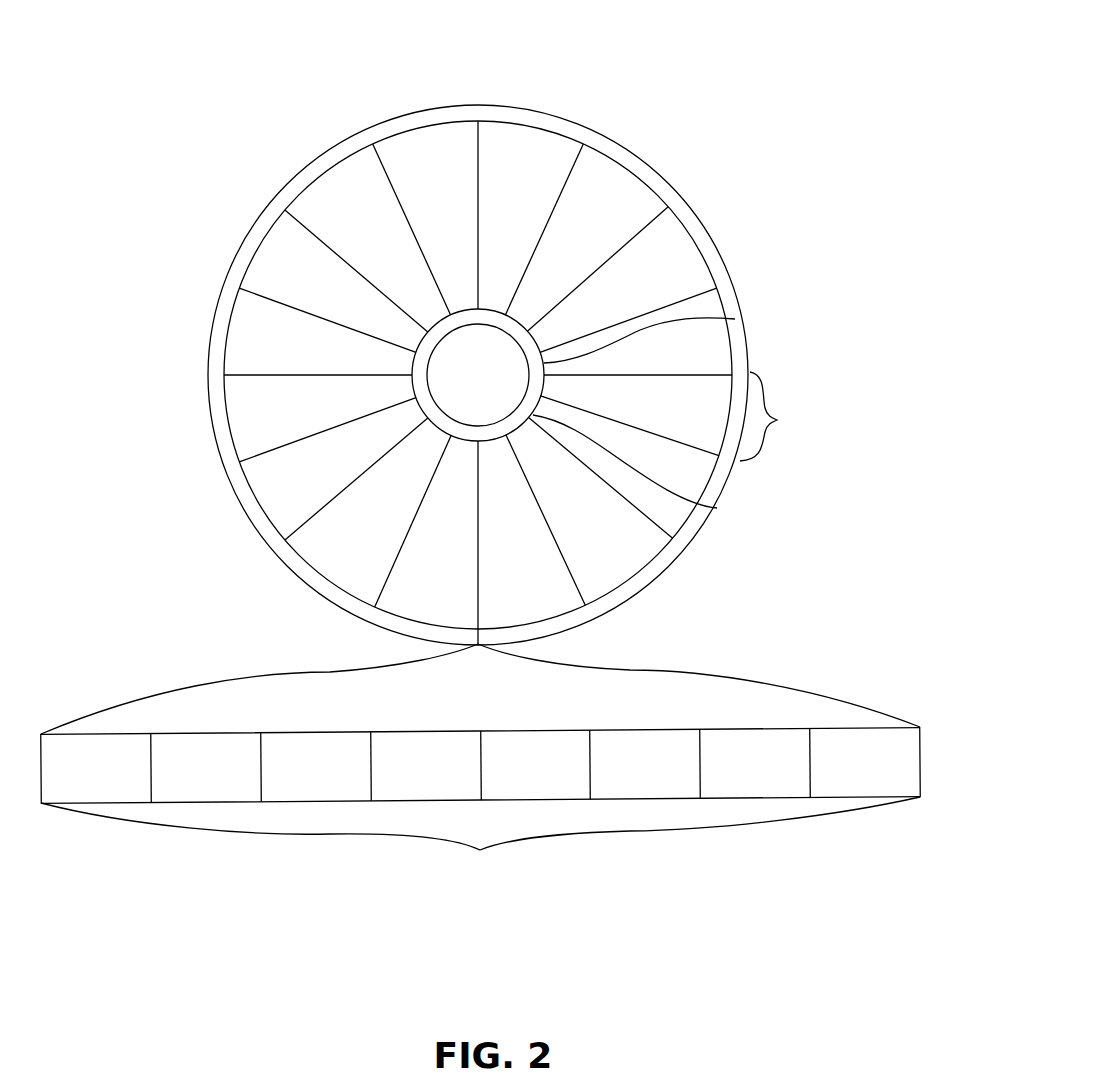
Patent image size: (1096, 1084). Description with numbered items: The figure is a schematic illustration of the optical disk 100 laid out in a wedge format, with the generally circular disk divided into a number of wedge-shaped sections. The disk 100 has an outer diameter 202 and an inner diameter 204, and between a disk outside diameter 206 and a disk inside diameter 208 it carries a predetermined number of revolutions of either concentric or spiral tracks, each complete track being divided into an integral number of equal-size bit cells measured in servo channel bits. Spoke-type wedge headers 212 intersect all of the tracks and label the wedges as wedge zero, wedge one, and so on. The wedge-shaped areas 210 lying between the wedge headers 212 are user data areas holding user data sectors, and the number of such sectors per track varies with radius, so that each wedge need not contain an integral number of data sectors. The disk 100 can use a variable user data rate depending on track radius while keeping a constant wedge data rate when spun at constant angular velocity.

The optical disk 100 is at (691, 56).
The outer diameter 202 is at (650, 162).
The inner diameter 204 is at (735, 319).
The disk outside diameter 206 is at (683, 220).
The disk inside diameter 208 is at (717, 508).
The wedge-shaped areas 210 is at (780, 416).
The wedge headers 212 is at (481, 763).